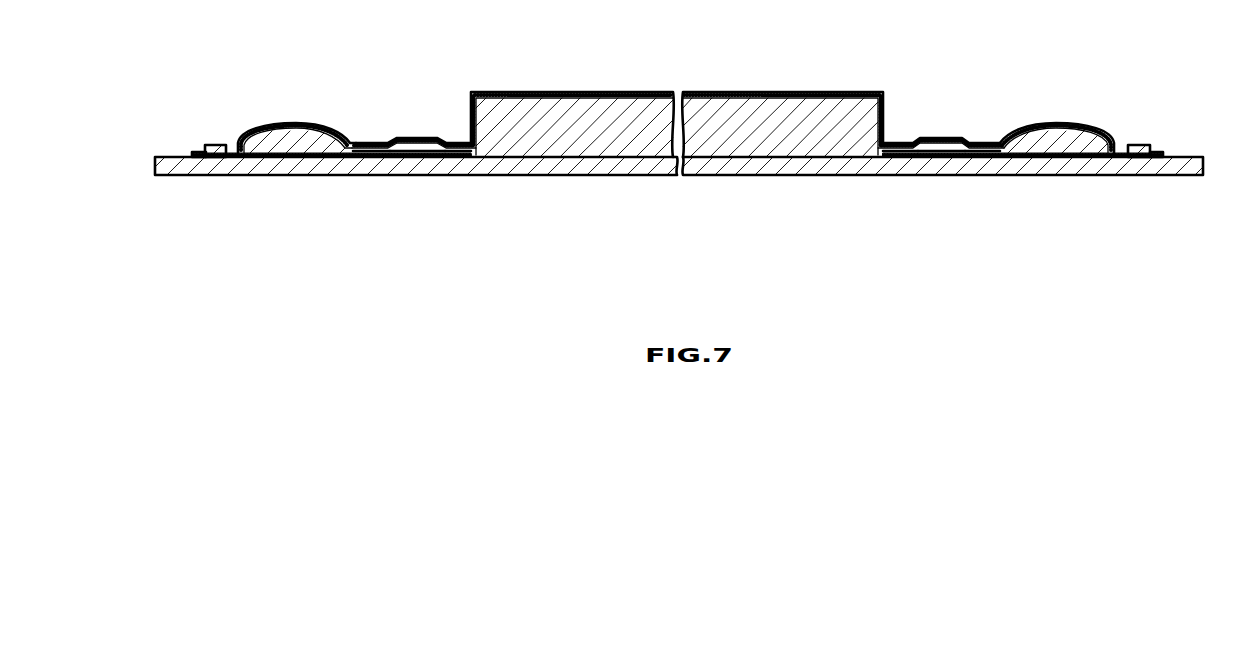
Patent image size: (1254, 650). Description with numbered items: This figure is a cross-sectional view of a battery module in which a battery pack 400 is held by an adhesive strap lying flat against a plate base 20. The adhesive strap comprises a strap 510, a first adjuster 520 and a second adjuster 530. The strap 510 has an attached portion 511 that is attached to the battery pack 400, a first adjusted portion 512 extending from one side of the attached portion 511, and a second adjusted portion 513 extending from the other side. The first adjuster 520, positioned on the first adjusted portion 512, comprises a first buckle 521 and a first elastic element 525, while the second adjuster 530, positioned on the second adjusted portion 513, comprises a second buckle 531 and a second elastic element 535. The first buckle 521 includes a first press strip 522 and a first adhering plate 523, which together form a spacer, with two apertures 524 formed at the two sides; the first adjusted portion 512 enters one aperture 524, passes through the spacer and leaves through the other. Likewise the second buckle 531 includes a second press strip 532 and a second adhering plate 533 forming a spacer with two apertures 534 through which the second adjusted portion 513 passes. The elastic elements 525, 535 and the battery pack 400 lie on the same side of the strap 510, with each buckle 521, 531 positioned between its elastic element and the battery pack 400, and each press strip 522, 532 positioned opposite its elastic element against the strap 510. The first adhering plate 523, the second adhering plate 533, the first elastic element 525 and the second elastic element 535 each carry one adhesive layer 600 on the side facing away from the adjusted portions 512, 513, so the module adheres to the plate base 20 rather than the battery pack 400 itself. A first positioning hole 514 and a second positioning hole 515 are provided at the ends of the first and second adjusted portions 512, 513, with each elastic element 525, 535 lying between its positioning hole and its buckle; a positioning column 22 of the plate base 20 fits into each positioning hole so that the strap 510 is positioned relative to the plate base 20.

The plate base 20 is at (679, 204).
The positioning column 22 is at (218, 150).
The battery pack 400 is at (559, 158).
The strap 510 is at (677, 87).
The attached portion 511 is at (545, 91).
The first adjusted portion 512 is at (300, 127).
The second adjusted portion 513 is at (1047, 127).
The first positioning hole 514 is at (198, 151).
The second positioning hole 515 is at (1156, 151).
The first adjuster 520 is at (357, 176).
The first buckle 521 is at (406, 200).
The first press strip 522 is at (417, 183).
The first adhering plate 523 is at (361, 154).
The aperture 524 is at (390, 142).
The first elastic element 525 is at (306, 143).
The second adjuster 530 is at (999, 176).
The second buckle 531 is at (949, 200).
The second press strip 532 is at (933, 154).
The second adhering plate 533 is at (912, 212).
The aperture 534 is at (918, 142).
The second elastic element 535 is at (1047, 143).
The adhesive layer 600 is at (268, 158).